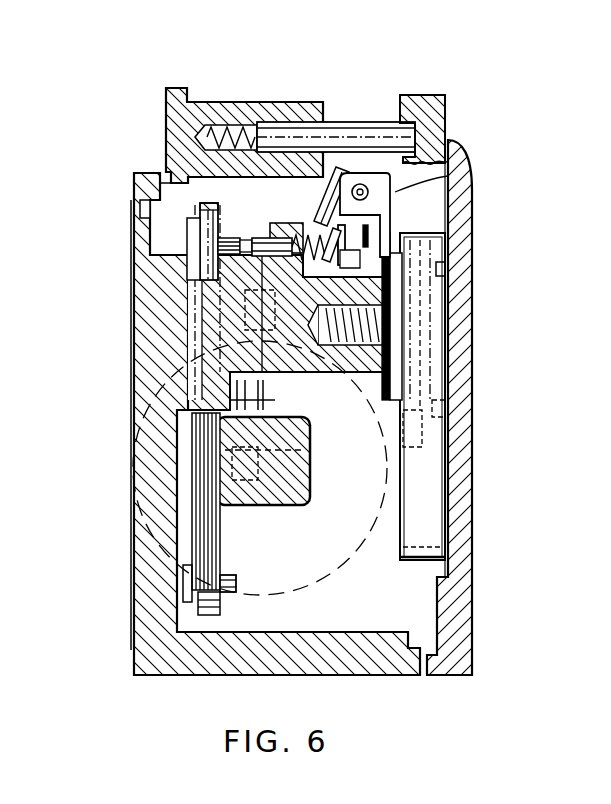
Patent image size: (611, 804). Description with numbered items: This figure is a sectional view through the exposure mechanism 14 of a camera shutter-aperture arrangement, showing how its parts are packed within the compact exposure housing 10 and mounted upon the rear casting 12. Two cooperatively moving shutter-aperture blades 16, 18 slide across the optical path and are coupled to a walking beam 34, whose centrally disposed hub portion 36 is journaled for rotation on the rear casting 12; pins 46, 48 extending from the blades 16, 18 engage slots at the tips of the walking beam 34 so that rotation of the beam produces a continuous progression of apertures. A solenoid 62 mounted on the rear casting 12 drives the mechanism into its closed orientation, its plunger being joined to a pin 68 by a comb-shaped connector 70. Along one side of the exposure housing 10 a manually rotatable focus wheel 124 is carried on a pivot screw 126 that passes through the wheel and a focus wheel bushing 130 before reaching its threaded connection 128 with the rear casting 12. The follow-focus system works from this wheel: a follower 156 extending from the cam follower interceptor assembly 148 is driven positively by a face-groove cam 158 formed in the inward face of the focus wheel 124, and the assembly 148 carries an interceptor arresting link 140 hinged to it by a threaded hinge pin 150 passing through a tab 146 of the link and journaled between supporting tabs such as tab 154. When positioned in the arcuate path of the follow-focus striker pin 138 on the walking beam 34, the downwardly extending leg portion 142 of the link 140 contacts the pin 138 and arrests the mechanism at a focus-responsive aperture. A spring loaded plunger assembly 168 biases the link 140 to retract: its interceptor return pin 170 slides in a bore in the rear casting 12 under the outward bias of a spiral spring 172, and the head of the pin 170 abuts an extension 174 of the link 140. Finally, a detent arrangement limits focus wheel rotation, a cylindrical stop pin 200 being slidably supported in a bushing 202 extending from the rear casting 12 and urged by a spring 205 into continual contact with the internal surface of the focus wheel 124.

The exposure housing 10 is at (460, 126).
The rear casting 12 is at (208, 668).
The exposure mechanism 14 is at (226, 599).
The shutter-aperture blade 16 is at (198, 215).
The shutter-aperture blade 18 is at (190, 545).
The walking beam 34 is at (218, 523).
The hub portion 36 is at (272, 392).
The pin 46 is at (236, 583).
The pin 48 is at (223, 237).
The solenoid 62 is at (332, 567).
The pin 68 is at (310, 446).
The comb-shaped connector 70 is at (305, 474).
The focus wheel 124 is at (438, 112).
The pivot screw 126 is at (463, 330).
The threaded connection 128 is at (316, 372).
The focus wheel bushing 130 is at (433, 368).
The follow-focus striker pin 138 is at (252, 256).
The interceptor arresting link 140 is at (320, 193).
The leg portion 142 is at (297, 380).
The tab 146 is at (336, 180).
The cam follower interceptor assembly 148 is at (453, 231).
The hinge pin 150 is at (440, 163).
The supporting tab 154 is at (448, 176).
The follower 156 is at (420, 284).
The face-groove cam 158 is at (453, 225).
The spring loaded plunger assembly 168 is at (308, 236).
The interceptor return pin 170 is at (278, 227).
The spiral spring 172 is at (326, 214).
The extension 174 is at (448, 270).
The stop pin 200 is at (357, 122).
The bushing 202 is at (323, 102).
The spring 205 is at (206, 126).